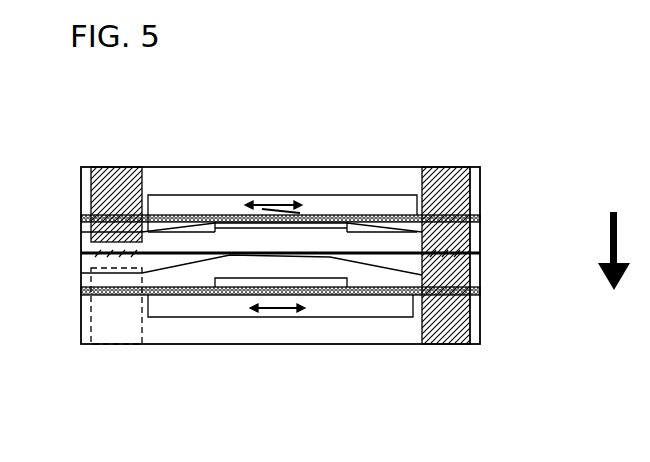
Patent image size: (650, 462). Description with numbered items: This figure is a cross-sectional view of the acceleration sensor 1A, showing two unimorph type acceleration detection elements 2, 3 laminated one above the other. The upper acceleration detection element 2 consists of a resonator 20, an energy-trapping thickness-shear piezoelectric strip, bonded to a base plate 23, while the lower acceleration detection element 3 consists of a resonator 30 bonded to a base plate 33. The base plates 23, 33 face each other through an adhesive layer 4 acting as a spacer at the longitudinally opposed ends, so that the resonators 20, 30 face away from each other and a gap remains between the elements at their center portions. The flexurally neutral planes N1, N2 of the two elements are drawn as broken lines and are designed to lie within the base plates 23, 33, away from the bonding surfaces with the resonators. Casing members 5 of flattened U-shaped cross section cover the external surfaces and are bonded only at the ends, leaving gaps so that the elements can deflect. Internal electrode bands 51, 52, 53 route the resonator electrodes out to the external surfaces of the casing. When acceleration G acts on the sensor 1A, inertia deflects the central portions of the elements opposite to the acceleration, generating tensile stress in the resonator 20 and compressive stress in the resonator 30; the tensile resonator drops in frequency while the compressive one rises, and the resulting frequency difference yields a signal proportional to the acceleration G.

The acceleration sensor 1A is at (497, 163).
The acceleration detection element 2 is at (488, 215).
The acceleration detection element 3 is at (488, 262).
The adhesive layer 4 is at (81, 253).
The casing member 5 is at (272, 167).
The resonator 20 is at (157, 195).
The base plate 23 is at (200, 232).
The resonator 30 is at (170, 298).
The base plate 33 is at (205, 280).
The internal electrode band 51 is at (447, 167).
The internal electrode band 52 is at (113, 176).
The internal electrode band 53 is at (91, 308).
The flexurally neutral plane N1 is at (357, 222).
The flexurally neutral plane N2 is at (376, 268).
The acceleration G is at (614, 232).